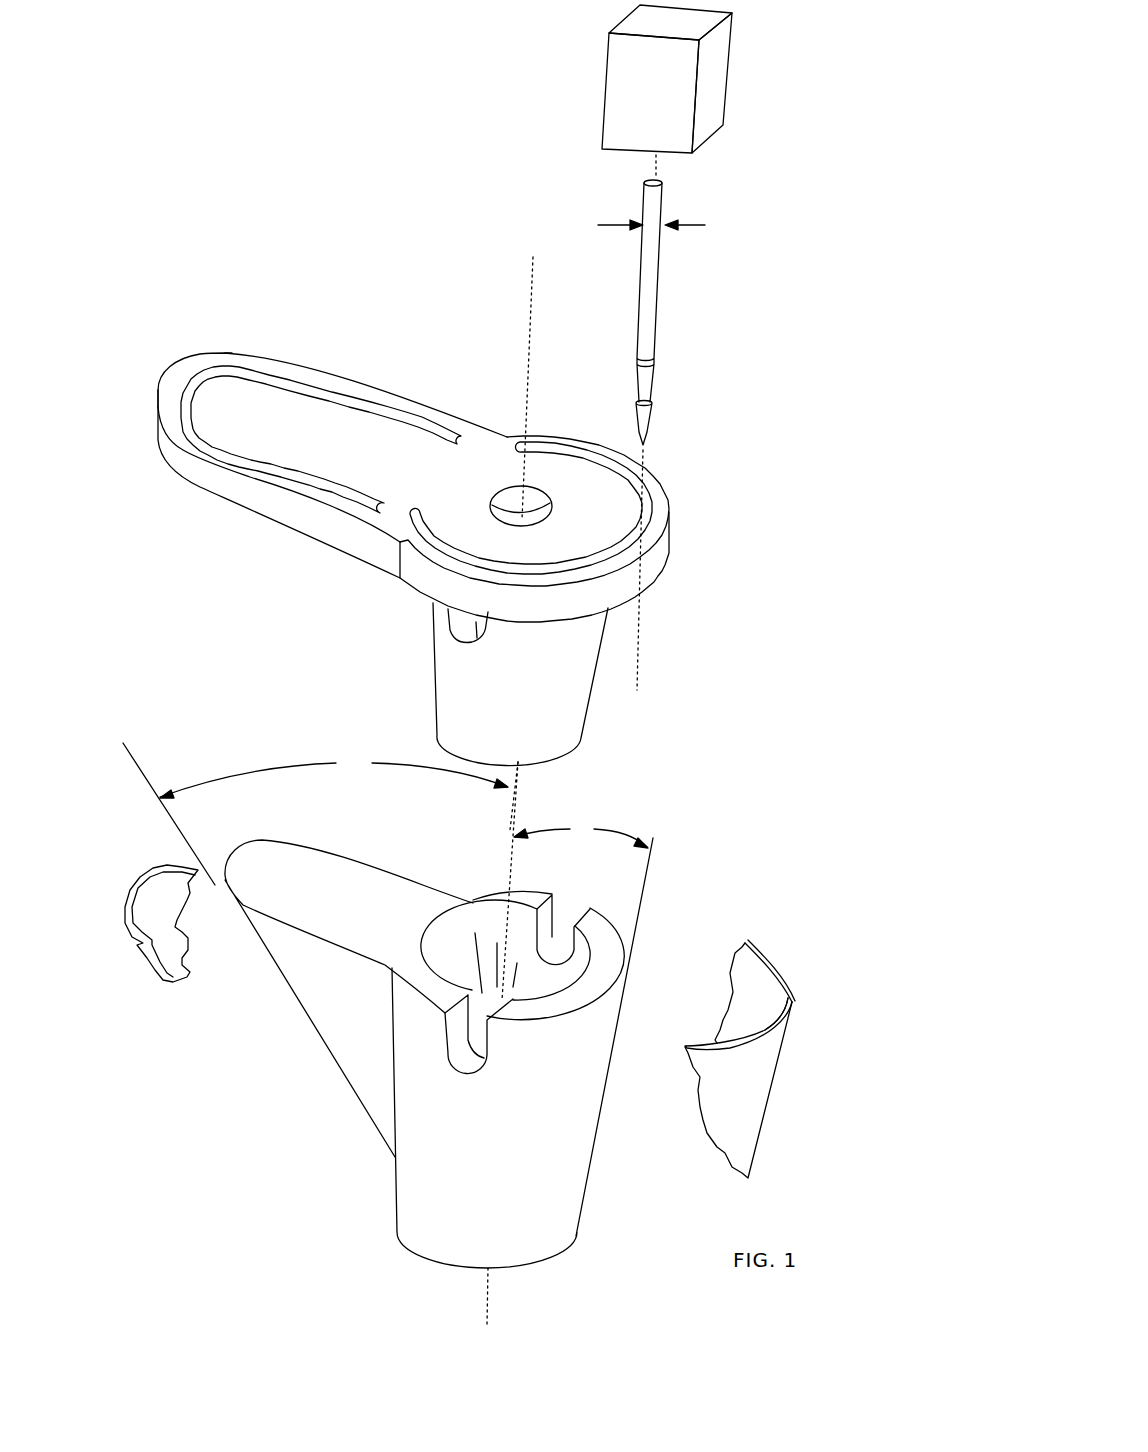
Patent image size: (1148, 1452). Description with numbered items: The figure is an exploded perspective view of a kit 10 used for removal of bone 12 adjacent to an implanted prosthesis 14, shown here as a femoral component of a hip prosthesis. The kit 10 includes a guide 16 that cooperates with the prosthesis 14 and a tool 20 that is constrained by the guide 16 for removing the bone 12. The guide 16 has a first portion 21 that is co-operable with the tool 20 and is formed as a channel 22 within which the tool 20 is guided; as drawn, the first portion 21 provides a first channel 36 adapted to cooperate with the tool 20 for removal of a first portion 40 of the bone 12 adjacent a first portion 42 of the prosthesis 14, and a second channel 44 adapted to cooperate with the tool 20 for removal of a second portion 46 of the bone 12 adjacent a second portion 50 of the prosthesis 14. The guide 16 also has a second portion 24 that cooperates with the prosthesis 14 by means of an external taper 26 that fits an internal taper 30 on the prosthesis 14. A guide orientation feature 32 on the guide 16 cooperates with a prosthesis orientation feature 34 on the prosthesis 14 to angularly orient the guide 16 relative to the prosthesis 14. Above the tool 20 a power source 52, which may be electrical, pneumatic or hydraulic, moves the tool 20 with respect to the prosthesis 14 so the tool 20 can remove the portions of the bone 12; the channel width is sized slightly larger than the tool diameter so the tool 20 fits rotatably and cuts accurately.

The kit 10 is at (303, 123).
The bone 12 is at (778, 1058).
The prosthesis 14 is at (776, 863).
The guide 16 is at (785, 557).
The tool 20 is at (657, 318).
The first portion of the guide 21 is at (403, 383).
The channel 22 is at (423, 420).
The second portion of the guide 24 is at (640, 757).
The external taper 26 is at (592, 690).
The internal taper 30 is at (452, 937).
The guide orientation feature 32 is at (447, 622).
The prosthesis orientation feature 34 is at (443, 1045).
The first channel 36 is at (667, 500).
The first portion of the bone 40 is at (792, 994).
The first portion of the prosthesis 42 is at (622, 993).
The second channel 44 is at (254, 355).
The second portion of the bone 46 is at (143, 957).
The second portion of the prosthesis 50 is at (275, 986).
The power source 52 is at (733, 72).